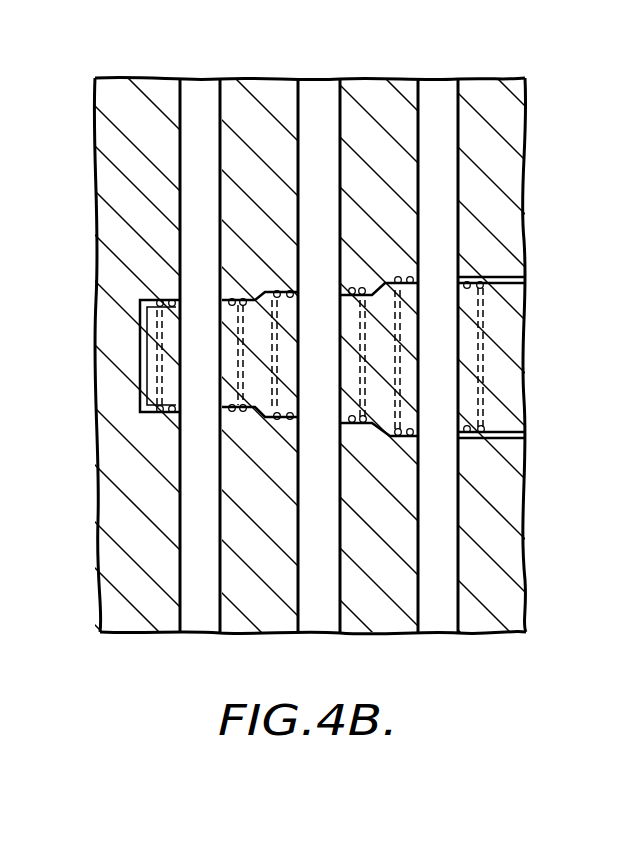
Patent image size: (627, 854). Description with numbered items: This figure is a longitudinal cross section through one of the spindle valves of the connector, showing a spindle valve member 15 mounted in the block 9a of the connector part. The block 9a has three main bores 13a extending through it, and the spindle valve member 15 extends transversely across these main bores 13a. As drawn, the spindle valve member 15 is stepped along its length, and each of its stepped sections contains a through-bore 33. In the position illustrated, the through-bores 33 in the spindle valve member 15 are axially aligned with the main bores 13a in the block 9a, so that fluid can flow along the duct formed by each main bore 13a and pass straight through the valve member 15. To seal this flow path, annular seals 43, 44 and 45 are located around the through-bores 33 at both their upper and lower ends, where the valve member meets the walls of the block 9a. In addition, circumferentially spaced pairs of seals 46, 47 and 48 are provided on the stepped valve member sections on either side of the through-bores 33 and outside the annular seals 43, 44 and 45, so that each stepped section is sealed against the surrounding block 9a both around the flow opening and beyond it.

The block 9a is at (122, 88).
The main bores 13a is at (217, 97).
The spindle valve member 15 is at (140, 374).
The through-bores 33 is at (250, 414).
The annular seal 43 is at (290, 294).
The annular seal 44 is at (395, 282).
The annular seal 45 is at (412, 282).
The circumferentially spaced pair of seals 46 is at (172, 412).
The circumferentially spaced pair of seals 47 is at (277, 422).
The circumferentially spaced pair of seals 48 is at (414, 434).